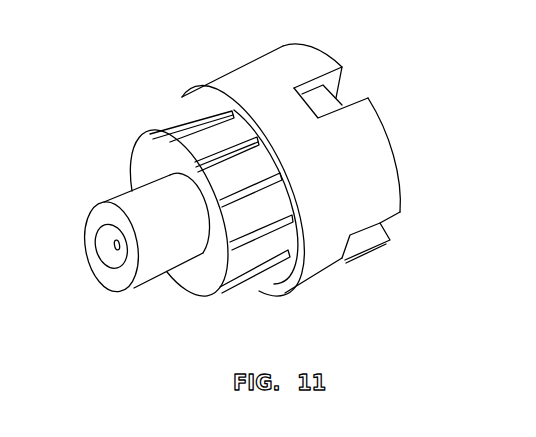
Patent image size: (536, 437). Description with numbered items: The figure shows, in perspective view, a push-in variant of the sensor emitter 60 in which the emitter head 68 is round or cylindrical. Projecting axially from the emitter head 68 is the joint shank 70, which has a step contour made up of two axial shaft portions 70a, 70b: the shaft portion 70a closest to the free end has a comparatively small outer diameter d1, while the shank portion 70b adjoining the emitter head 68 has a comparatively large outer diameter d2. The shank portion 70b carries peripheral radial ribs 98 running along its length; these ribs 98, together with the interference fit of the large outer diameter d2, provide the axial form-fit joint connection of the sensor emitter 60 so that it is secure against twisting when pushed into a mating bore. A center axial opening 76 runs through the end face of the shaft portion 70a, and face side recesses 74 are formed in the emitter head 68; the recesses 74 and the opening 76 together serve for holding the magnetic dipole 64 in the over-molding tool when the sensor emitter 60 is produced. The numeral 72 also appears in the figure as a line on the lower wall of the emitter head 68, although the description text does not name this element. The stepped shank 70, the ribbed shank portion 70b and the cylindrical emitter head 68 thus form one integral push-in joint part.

The sensor emitter 60 is at (240, 67).
The magnetic dipole 64 is at (330, 104).
The emitter head 68 is at (390, 145).
The joint shank 70 is at (90, 225).
The shaft portion 70a is at (127, 193).
The shank portion 70b is at (193, 122).
The housing bottom wall 72 is at (320, 275).
The face side recesses 74 is at (382, 222).
The center axial opening 76 is at (110, 248).
The peripheral radial ribs 98 is at (268, 260).
The outer diameter d1 is at (140, 283).
The outer diameter d2 is at (224, 296).